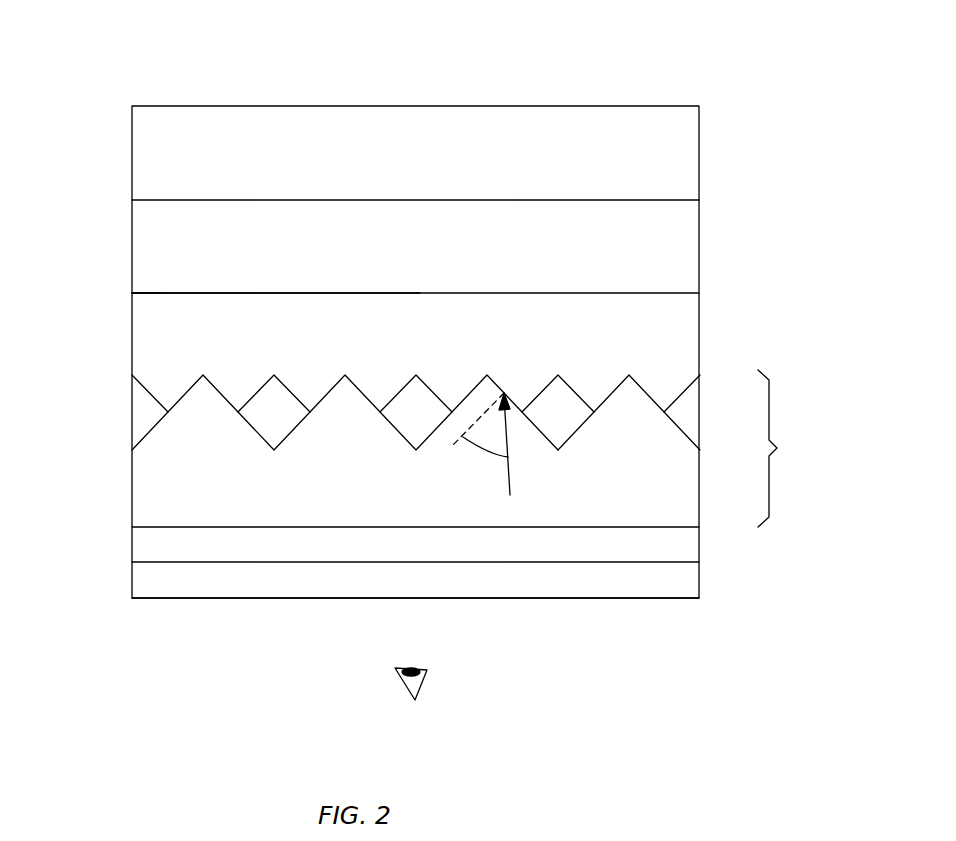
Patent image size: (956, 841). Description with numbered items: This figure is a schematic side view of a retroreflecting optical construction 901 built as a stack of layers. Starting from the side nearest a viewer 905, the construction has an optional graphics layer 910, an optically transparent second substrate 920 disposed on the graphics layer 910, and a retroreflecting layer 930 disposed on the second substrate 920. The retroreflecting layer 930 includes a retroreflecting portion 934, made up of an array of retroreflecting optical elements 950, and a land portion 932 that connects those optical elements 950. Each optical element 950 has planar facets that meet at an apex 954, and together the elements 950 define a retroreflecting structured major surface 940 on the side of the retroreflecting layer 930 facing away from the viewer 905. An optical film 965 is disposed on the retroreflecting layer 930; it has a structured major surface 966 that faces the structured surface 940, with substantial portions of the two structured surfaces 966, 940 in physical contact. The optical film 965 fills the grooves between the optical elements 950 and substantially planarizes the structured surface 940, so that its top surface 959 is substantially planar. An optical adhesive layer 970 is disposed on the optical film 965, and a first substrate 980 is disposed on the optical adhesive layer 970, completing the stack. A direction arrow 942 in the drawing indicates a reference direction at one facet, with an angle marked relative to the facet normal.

The retroreflecting optical construction 901 is at (172, 47).
The viewer 905 is at (405, 688).
The graphics layer 910 is at (143, 582).
The second substrate 920 is at (143, 547).
The retroreflecting layer 930 is at (794, 448).
The land portion 932 is at (143, 492).
The retroreflecting portion 934 is at (143, 417).
The retroreflecting structured major surface 940 is at (393, 395).
The light ray direction 942 is at (511, 483).
The retroreflecting optical elements 950 is at (633, 437).
The apex 954 is at (629, 374).
The top surface 959 is at (306, 292).
The optical film 965 is at (145, 313).
The structured major surface 966 is at (291, 392).
The optical adhesive layer 970 is at (685, 247).
The first substrate 980 is at (685, 156).